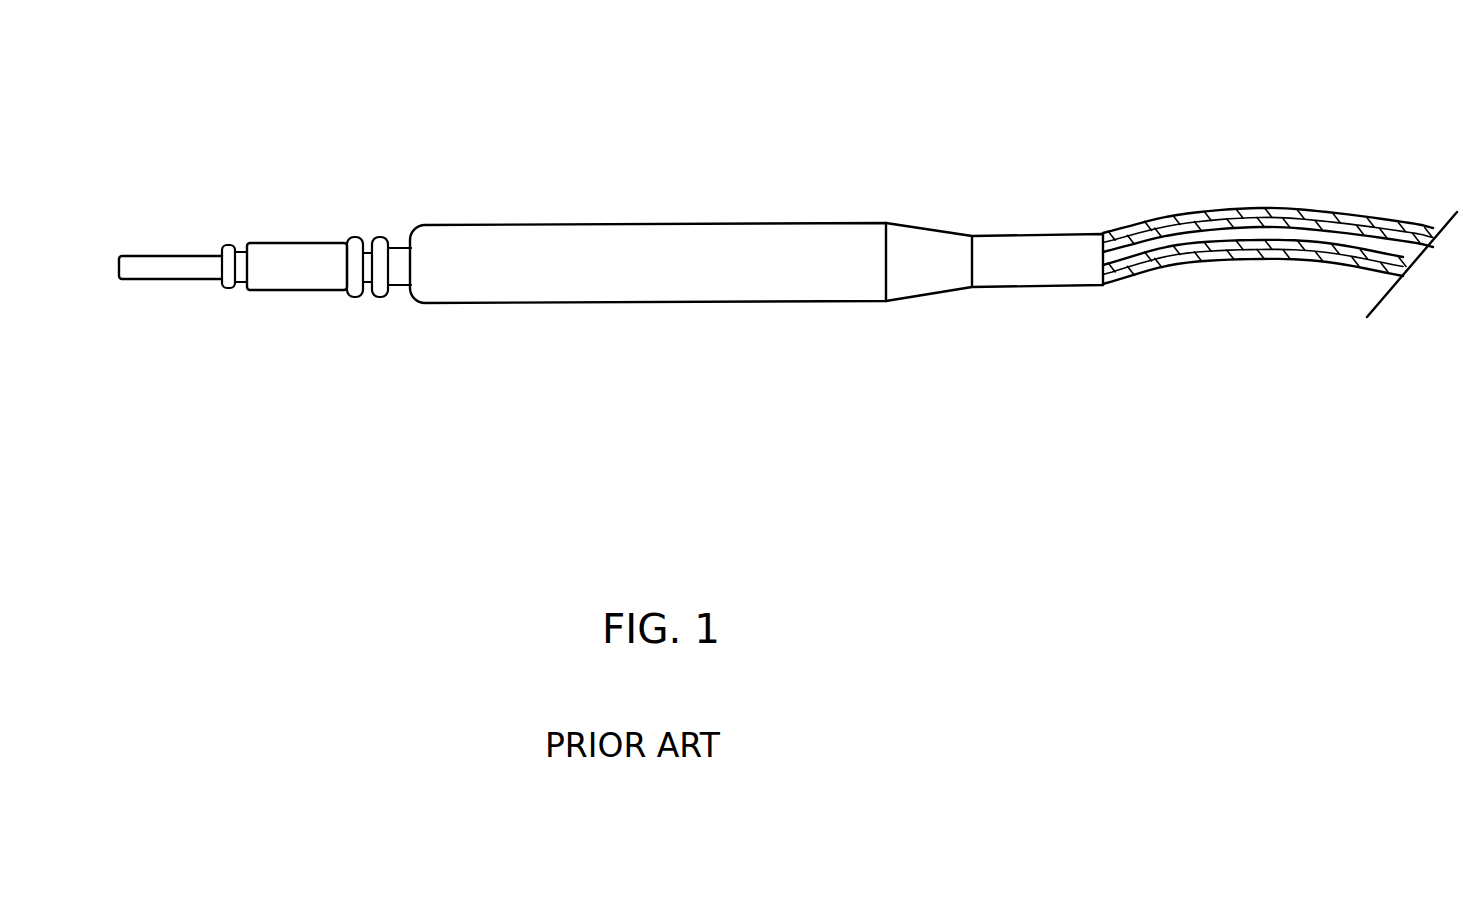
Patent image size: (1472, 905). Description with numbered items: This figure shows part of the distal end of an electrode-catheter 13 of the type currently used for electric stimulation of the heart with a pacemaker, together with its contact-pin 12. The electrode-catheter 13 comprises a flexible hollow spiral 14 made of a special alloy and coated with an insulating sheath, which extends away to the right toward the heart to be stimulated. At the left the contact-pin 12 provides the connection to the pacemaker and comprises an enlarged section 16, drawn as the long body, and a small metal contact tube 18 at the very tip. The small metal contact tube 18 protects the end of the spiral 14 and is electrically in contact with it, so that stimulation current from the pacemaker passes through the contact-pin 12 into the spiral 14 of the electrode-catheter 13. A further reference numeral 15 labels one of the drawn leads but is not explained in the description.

The contact-pin 12 is at (788, 265).
The electrode-catheter 13 is at (1280, 265).
The flexible hollow spiral 14 is at (1240, 260).
The upper conductor lead of cable 15 is at (1173, 217).
The enlarged section 16 is at (555, 240).
The small metal contact tube 18 is at (176, 258).